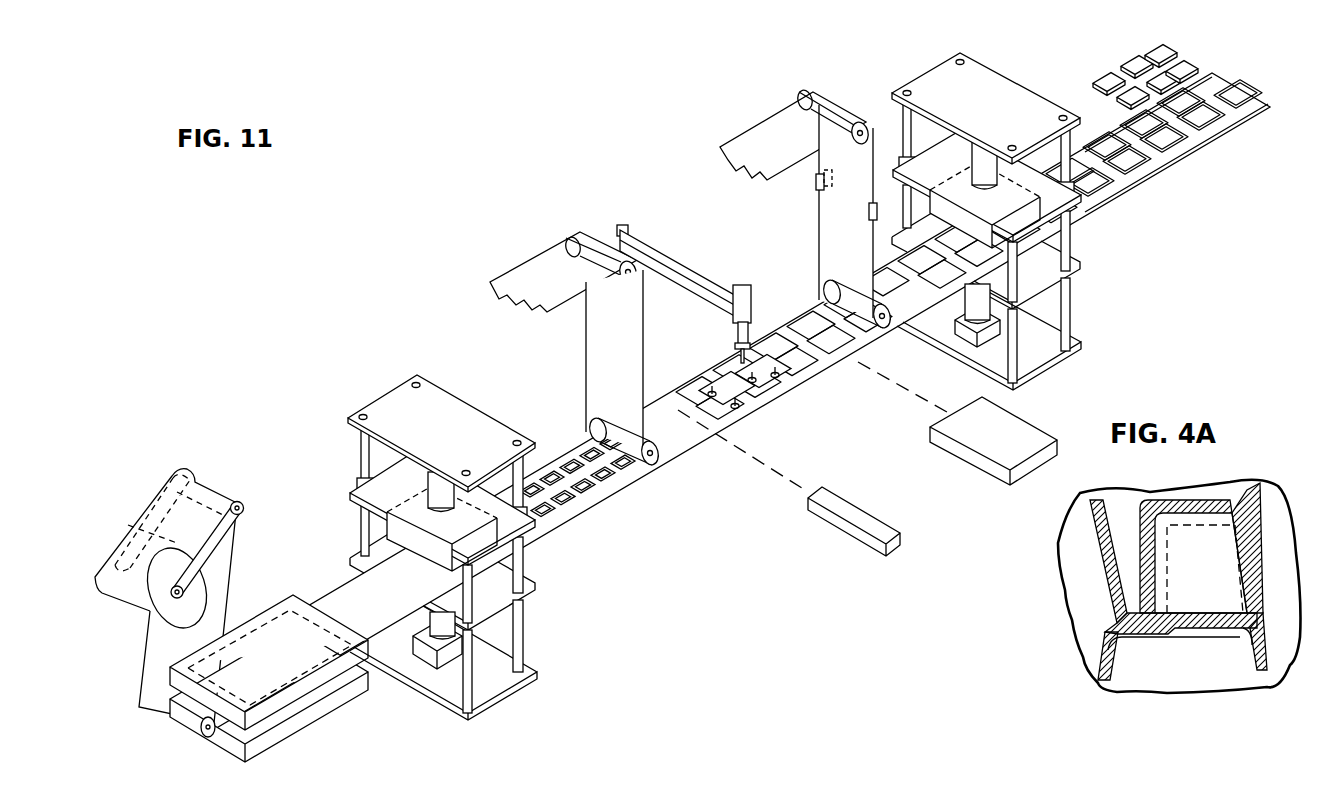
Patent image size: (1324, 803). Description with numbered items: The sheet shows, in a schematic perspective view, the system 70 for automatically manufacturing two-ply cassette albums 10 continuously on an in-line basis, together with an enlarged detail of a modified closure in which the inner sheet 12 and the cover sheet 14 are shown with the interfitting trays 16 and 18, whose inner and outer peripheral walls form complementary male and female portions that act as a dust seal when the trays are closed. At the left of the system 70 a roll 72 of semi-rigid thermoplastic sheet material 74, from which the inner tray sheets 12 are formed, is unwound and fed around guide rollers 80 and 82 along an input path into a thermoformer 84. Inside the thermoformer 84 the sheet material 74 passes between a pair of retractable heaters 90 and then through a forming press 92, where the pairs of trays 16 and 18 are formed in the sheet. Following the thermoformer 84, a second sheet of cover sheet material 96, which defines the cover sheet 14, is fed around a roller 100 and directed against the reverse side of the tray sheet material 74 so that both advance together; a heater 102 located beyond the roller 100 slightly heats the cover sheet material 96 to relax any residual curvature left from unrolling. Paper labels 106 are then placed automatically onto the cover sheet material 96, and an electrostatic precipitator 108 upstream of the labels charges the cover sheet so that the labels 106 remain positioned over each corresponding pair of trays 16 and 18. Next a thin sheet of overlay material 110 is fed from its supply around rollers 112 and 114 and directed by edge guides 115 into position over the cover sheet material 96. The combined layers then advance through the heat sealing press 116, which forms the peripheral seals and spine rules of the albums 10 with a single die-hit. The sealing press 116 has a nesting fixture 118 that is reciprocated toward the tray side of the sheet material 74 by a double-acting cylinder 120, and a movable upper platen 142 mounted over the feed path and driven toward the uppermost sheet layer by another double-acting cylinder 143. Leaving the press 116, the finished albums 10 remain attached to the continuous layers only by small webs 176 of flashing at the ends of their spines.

In FIG. 11, the album 10 is at (1168, 50).
In FIG. 4a, the inner sheet 12 is at (1103, 645).
In FIG. 4a, the cover sheet 14 is at (1096, 555).
In FIG. 11, the tray 16 is at (555, 520).
In FIG. 4a, the tray 16 is at (1268, 657).
In FIG. 11, the tray 18 is at (576, 516).
In FIG. 4a, the tray 18 is at (1262, 487).
In FIG. 11, the system for manufacturing two-ply albums 70 is at (476, 248).
In FIG. 11, the roll 72 is at (140, 603).
In FIG. 11, the sheet material 74 is at (226, 597).
In FIG. 11, the guide roller 80 is at (239, 500).
In FIG. 11, the guide roller 82 is at (205, 735).
In FIG. 11, the thermoformer 84 is at (418, 523).
In FIG. 11, the retractable heaters 90 is at (301, 606).
In FIG. 11, the forming press 92 is at (443, 427).
In FIG. 11, the cover sheet material 96 is at (567, 287).
In FIG. 11, the roller 100 is at (655, 461).
In FIG. 11, the heater 102 is at (1028, 428).
In FIG. 11, the paper labels 106 is at (728, 408).
In FIG. 11, the electrostatic precipitator 108 is at (858, 514).
In FIG. 11, the sheet of overlay material 110 is at (744, 137).
In FIG. 11, the roller 112 is at (871, 120).
In FIG. 11, the roller 114 is at (884, 325).
In FIG. 11, the edge guides 115 is at (868, 212).
In FIG. 11, the sealing press 116 is at (1016, 211).
In FIG. 11, the nesting fixture 118 is at (988, 247).
In FIG. 11, the double-acting cylinder 120 is at (998, 312).
In FIG. 11, the upper platen 142 is at (1000, 289).
In FIG. 11, the double-acting cylinder 143 is at (980, 164).
In FIG. 11, the webs of flashing 176 is at (1133, 180).